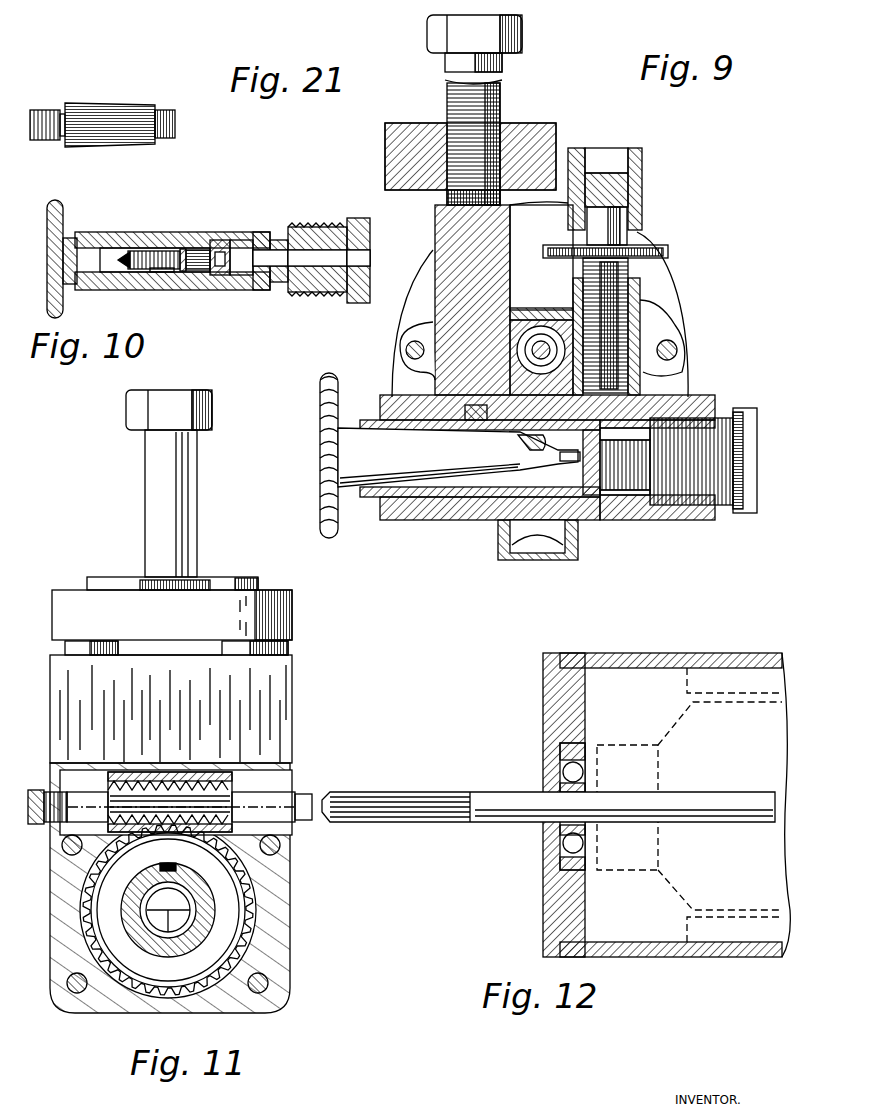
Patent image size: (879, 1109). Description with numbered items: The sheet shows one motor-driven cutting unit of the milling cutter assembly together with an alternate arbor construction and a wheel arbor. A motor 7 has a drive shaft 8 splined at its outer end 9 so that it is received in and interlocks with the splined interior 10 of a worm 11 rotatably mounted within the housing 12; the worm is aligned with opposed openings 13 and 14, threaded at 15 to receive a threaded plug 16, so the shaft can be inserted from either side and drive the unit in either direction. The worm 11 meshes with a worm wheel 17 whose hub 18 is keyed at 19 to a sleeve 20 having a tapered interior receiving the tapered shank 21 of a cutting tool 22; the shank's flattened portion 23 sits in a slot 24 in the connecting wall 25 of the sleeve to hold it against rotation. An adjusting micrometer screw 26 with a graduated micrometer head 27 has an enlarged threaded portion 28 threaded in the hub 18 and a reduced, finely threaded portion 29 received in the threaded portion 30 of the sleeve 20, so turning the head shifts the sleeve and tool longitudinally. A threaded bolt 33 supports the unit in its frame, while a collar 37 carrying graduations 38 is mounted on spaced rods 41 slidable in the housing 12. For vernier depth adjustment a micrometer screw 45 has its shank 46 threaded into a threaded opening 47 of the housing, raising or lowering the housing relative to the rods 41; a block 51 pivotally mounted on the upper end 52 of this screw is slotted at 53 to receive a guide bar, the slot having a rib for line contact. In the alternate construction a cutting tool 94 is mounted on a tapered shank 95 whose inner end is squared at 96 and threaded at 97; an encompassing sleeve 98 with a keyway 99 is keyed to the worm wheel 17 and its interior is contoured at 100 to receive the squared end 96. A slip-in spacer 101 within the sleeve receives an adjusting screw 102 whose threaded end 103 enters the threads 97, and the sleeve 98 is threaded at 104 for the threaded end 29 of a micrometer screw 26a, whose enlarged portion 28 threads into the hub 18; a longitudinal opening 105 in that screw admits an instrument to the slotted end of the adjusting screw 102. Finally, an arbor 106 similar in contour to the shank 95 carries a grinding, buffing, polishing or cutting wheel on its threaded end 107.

In FIG. 9, the motor 7 is at (685, 333).
In FIG. 12, the motor 7 is at (668, 653).
In FIG. 12, the drive shaft 8 is at (483, 792).
In FIG. 12, the splined outer end 9 is at (405, 792).
In FIG. 11, the splined interior 10 is at (232, 786).
In FIG. 9, the worm 11 is at (541, 330).
In FIG. 11, the worm 11 is at (232, 824).
In FIG. 9, the housing 12 is at (714, 393).
In FIG. 11, the housing 12 is at (292, 712).
In FIG. 11, the opening 13 is at (60, 836).
In FIG. 11, the opening 14 is at (252, 806).
In FIG. 11, the threads 15 is at (302, 795).
In FIG. 11, the threaded plug 16 is at (38, 790).
In FIG. 9, the worm wheel 17 is at (525, 548).
In FIG. 11, the worm wheel 17 is at (238, 895).
In FIG. 9, the hub 18 is at (665, 402).
In FIG. 11, the hub 18 is at (205, 930).
In FIG. 9, the key 19 is at (470, 407).
In FIG. 11, the key 19 is at (128, 883).
In FIG. 9, the sleeve 20 is at (443, 500).
In FIG. 11, the sleeve 20 is at (120, 916).
In FIG. 9, the tapered shank 21 is at (458, 457).
In FIG. 9, the cutting tool 22 is at (336, 524).
In FIG. 9, the flattened portion 23 is at (560, 458).
In FIG. 9, the slot 24 is at (588, 497).
In FIG. 11, the slot 24 is at (190, 910).
In FIG. 9, the connecting wall 25 is at (520, 442).
In FIG. 11, the connecting wall 25 is at (160, 948).
In FIG. 9, the adjusting micrometer screw 26 is at (724, 413).
In FIG. 10, the micrometer screw 26a is at (344, 228).
In FIG. 10, the micrometer head 27 is at (362, 218).
In FIG. 9, the micrometer head 27 is at (757, 455).
In FIG. 10, the enlarged threaded portion 28 is at (314, 293).
In FIG. 9, the enlarged threaded portion 28 is at (718, 506).
In FIG. 10, the reduced finely threaded portion 29 is at (280, 290).
In FIG. 9, the reduced finely threaded portion 29 is at (647, 497).
In FIG. 9, the threaded portion 30 is at (617, 497).
In FIG. 9, the threaded bolt 33 is at (500, 88).
In FIG. 11, the threaded bolt 33 is at (146, 472).
In FIG. 9, the collar 37 is at (545, 124).
In FIG. 11, the collar 37 is at (54, 600).
In FIG. 11, the graduations 38 is at (188, 586).
In FIG. 9, the spaced rods 41 is at (450, 195).
In FIG. 11, the spaced rods 41 is at (333, 656).
In FIG. 9, the micrometer screw 45 is at (669, 250).
In FIG. 9, the shank 46 is at (645, 300).
In FIG. 9, the threaded opening 47 is at (682, 397).
In FIG. 9, the block 51 is at (643, 188).
In FIG. 9, the upper end 52 is at (613, 218).
In FIG. 9, the slot 53 is at (607, 162).
In FIG. 10, the cutting tool 94 is at (63, 212).
In FIG. 21, the tapered shank 95 is at (157, 99).
In FIG. 10, the tapered shank 95 is at (98, 238).
In FIG. 21, the squared end 96 is at (176, 116).
In FIG. 10, the squared end 96 is at (178, 248).
In FIG. 10, the threaded portion 97 is at (122, 272).
In FIG. 10, the sleeve 98 is at (155, 292).
In FIG. 10, the keyway 99 is at (222, 248).
In FIG. 10, the polygonal opening 100 is at (172, 274).
In FIG. 10, the slip-in spacer 101 is at (193, 250).
In FIG. 10, the adjusting screw 102 is at (222, 277).
In FIG. 10, the threaded end 103 is at (152, 250).
In FIG. 10, the threaded portion 104 is at (248, 240).
In FIG. 10, the longitudinal opening 105 is at (288, 250).
In FIG. 21, the arbor 106 is at (95, 102).
In FIG. 21, the threaded end 107 is at (42, 108).